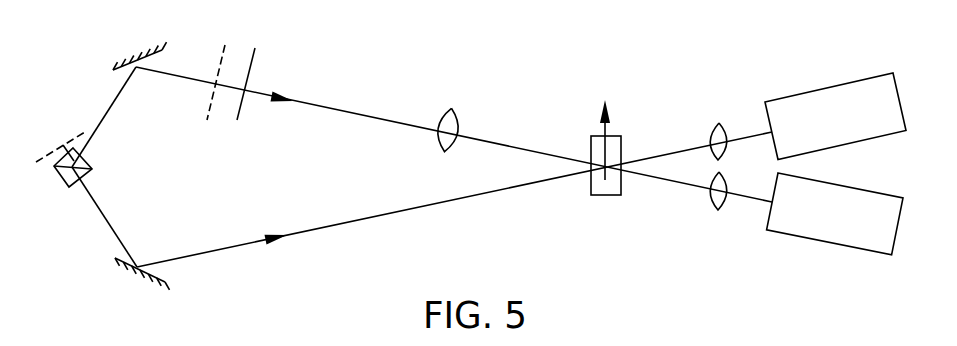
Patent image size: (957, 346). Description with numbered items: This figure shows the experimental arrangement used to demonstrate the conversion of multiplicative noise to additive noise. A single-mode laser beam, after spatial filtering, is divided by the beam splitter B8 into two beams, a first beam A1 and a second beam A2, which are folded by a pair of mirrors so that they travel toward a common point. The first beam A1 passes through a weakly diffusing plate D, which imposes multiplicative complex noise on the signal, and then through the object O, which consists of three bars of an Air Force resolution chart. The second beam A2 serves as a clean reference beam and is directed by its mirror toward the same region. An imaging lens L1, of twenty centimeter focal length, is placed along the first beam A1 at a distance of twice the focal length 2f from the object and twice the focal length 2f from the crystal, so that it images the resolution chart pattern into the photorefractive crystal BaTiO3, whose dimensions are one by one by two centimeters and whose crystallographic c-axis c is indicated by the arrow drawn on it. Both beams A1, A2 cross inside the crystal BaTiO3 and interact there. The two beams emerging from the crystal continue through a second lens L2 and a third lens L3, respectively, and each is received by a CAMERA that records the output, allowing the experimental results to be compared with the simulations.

The beam splitter B8 is at (86, 167).
The first beam A1 is at (454, 124).
The second beam A2 is at (454, 199).
The weakly diffusing plate D is at (221, 69).
The object O is at (252, 70).
The distance of twice the focal length 2f is at (454, 119).
The imaging lens L1 is at (450, 110).
The photorefractive crystal of BaTiO3 is at (608, 130).
The c-axis c is at (617, 140).
The second lens L2 is at (716, 119).
The third lens L3 is at (716, 213).
The camera CAMERA is at (835, 164).